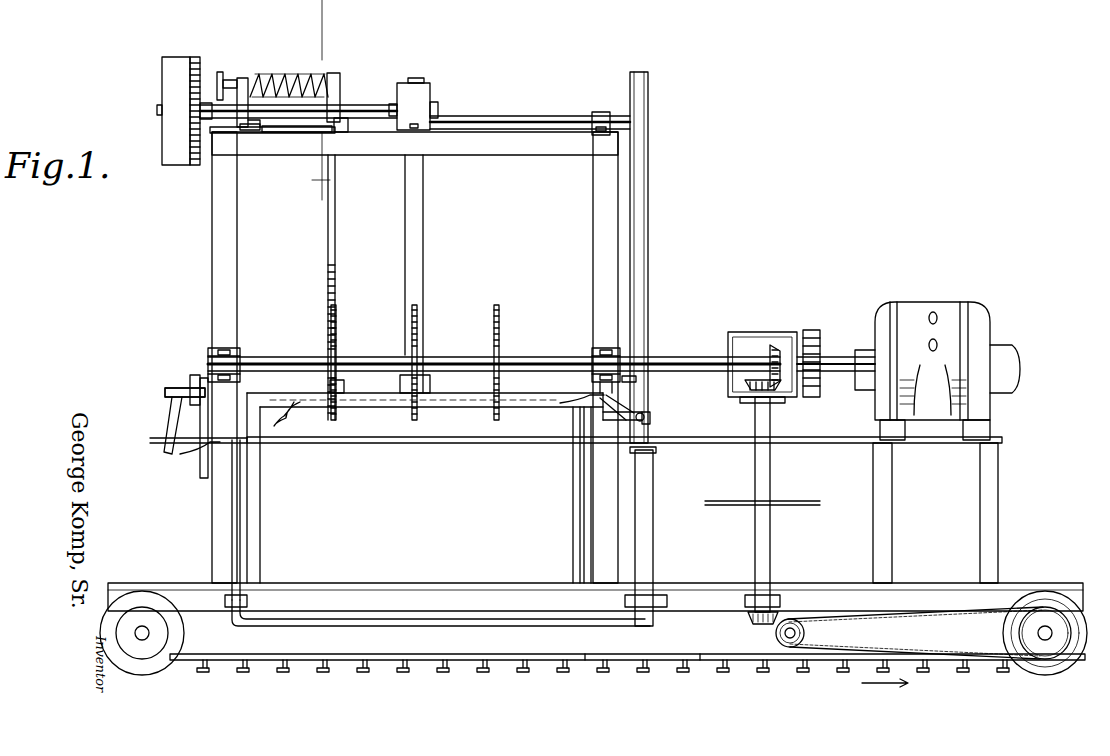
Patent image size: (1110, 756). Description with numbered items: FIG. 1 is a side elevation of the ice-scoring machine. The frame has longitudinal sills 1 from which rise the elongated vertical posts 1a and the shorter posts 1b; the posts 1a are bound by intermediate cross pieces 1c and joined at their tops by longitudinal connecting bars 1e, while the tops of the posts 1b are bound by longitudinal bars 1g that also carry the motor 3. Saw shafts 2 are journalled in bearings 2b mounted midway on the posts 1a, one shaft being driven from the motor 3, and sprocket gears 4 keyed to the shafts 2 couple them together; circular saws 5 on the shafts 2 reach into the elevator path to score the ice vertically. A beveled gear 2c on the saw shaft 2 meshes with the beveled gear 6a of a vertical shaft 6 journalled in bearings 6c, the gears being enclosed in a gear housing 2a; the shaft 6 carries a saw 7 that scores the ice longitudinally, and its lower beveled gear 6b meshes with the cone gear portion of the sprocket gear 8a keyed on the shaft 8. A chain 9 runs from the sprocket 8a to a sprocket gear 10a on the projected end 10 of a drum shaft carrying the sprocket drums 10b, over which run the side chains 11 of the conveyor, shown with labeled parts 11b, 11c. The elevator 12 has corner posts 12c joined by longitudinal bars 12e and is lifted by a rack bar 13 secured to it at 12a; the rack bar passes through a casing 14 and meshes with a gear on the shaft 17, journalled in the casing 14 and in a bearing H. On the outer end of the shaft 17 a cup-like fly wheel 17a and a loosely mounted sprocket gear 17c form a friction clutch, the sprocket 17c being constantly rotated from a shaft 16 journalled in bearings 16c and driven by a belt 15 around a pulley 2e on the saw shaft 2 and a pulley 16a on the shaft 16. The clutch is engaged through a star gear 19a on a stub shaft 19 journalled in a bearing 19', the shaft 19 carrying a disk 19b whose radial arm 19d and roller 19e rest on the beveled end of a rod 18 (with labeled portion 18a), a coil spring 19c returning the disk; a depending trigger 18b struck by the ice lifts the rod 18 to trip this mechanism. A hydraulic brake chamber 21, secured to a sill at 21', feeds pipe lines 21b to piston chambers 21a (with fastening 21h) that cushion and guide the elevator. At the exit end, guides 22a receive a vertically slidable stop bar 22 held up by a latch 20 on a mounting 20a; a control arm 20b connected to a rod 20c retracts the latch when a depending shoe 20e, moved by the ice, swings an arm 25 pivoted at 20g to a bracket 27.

The longitudinal sills 1 is at (1046, 583).
The vertical posts 1a is at (212, 282).
The upstanding posts 1b is at (892, 512).
The cross pieces 1c is at (203, 370).
The longitudinal connecting bars 1e is at (507, 155).
The longitudinal bars 1g is at (1002, 441).
The saw shafts 2 is at (516, 358).
The gear housings 2a is at (728, 340).
The bearings 2b is at (226, 348).
The beveled gear 2c is at (774, 346).
The pulley 2e is at (638, 378).
The motor 3 is at (878, 320).
The sprocket gears 4 is at (811, 330).
The circular saws 5 is at (336, 318).
The vertical shaft 6 is at (771, 552).
The beveled gear 6a is at (740, 404).
The beveled gear 6b is at (749, 622).
The bearings 6c is at (772, 592).
The saws 7 is at (726, 502).
The shaft 8 is at (804, 634).
The sprocket gear 8a is at (778, 638).
The chain 9 is at (878, 624).
The projected drum shaft end 10 is at (1044, 636).
The sprocket gear 10a is at (1019, 633).
The sprocket drums 10b is at (1030, 672).
The side chains 11 is at (500, 660).
The bar tooth 11b is at (700, 665).
The bar tooth 11c is at (590, 660).
The elevator 12 is at (570, 524).
The rack bar securing point 12a is at (440, 395).
The corner posts 12c is at (573, 490).
The longitudinal bars 12e is at (351, 408).
The rack bar 13 is at (423, 210).
The casing 14 is at (420, 84).
The belt 15 is at (648, 256).
The shaft 16 is at (519, 117).
The pulley 16a is at (648, 80).
The bearings 16c is at (600, 112).
The shaft 17 is at (352, 104).
The cup-like fly wheel 17a is at (162, 90).
The sprocket gear 17c is at (194, 58).
The rod 18 is at (328, 244).
The toothed rack 18a is at (328, 290).
The trigger member 18b is at (296, 415).
The stub shaft 19 is at (253, 80).
The bearing 19' is at (255, 154).
The star gear 19a is at (221, 72).
The disk 19b is at (332, 73).
The coil spring 19c is at (339, 6).
The radial arm 19d is at (340, 134).
The roller 19e is at (330, 132).
The latch 20 is at (185, 389).
The mounting 20a is at (167, 396).
The control arm 20b is at (160, 424).
The rod 20c is at (395, 446).
The shoe 20e is at (588, 408).
The pivot 20g is at (664, 424).
The main hydraulic brake chamber 21 is at (659, 536).
The chamber securing point 21' is at (660, 583).
The piston chambers 21a is at (236, 536).
The pipe lines 21b is at (394, 633).
The pipe clamp 21h is at (228, 608).
The stop bar 22 is at (206, 470).
The guides 22a is at (180, 454).
The arm 25 is at (626, 402).
The bracket 27 is at (646, 415).
The bearing H is at (198, 121).